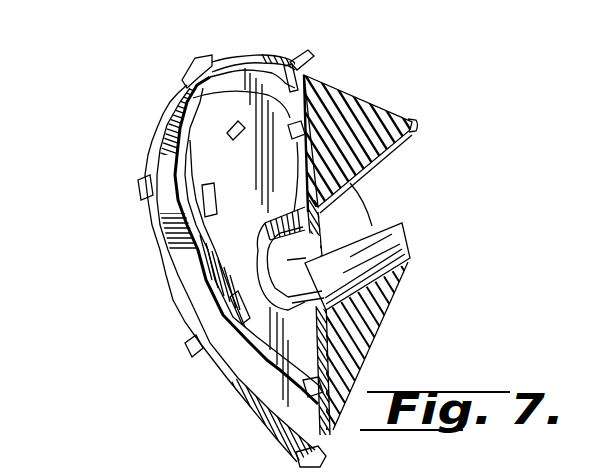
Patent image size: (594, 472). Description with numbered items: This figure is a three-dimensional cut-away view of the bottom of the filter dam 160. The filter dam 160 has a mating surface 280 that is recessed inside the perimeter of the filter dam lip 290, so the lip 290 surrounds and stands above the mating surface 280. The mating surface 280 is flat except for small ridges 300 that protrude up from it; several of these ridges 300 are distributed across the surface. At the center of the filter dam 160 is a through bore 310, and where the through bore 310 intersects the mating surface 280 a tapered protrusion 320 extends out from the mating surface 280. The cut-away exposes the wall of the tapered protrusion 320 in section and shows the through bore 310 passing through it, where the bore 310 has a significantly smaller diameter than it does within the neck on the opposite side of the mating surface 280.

The filter dam 160 is at (394, 304).
The mating surface 280 is at (257, 418).
The filter dam lip 290 is at (193, 310).
The small ridges 300 is at (232, 295).
The through bore 310 is at (372, 226).
The tapered protrusion 320 is at (338, 110).